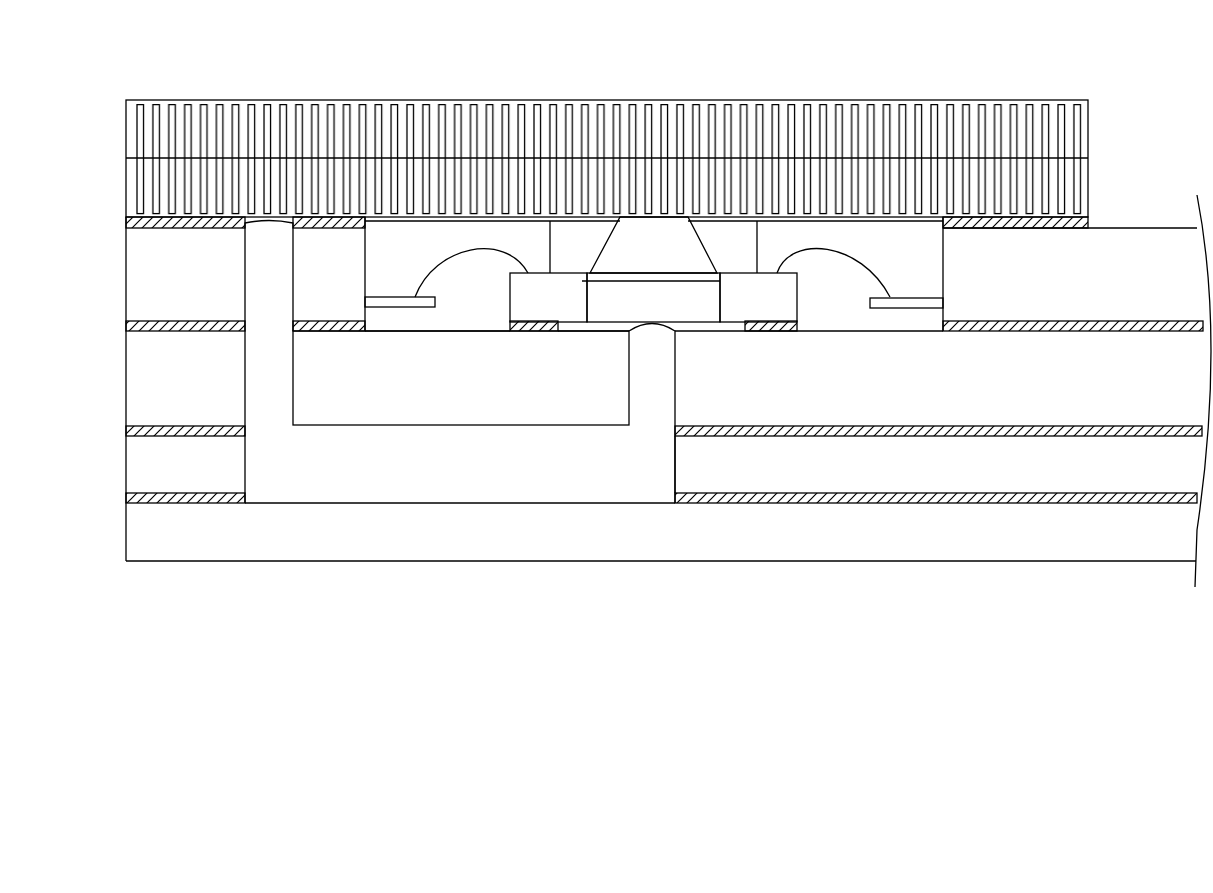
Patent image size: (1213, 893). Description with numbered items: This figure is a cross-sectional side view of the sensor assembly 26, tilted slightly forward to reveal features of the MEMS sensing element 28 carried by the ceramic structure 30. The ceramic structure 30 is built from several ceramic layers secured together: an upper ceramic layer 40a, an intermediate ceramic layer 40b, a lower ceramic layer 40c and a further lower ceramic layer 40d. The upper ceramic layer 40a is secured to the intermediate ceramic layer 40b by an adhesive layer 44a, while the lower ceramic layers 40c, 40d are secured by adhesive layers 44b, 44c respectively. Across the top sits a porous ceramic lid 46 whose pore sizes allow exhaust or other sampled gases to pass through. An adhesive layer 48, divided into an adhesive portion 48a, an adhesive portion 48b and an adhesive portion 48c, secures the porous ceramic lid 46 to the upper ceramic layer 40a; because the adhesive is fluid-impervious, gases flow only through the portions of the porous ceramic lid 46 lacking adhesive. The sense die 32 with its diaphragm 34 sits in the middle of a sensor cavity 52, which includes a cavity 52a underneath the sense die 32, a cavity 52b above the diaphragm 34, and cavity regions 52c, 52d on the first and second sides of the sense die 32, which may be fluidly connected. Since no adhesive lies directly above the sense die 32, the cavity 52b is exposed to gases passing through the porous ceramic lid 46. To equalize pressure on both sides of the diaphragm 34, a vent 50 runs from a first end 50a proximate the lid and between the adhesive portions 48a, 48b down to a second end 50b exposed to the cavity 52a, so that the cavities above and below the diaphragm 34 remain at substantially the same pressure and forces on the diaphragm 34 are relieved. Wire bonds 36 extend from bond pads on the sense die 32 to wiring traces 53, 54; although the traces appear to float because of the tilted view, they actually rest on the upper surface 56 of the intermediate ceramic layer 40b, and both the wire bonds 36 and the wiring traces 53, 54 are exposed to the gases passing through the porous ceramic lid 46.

The sensor assembly 26 is at (874, 62).
The MEMS sensing element 28 is at (645, 205).
The ceramic structure 30 is at (605, 572).
The sense die 32 is at (543, 303).
The diaphragm 34 is at (696, 277).
The wire bonds 36 is at (455, 249).
The upper ceramic layer 40a is at (1065, 290).
The intermediate ceramic layer 40b is at (1065, 395).
The lower ceramic layer 40c is at (1063, 483).
The lower ceramic layer 40d is at (1063, 546).
The adhesive layer 44a is at (1028, 332).
The adhesive layer 44b is at (1028, 437).
The adhesive layer 44c is at (1028, 503).
The porous ceramic lid 46 is at (1086, 110).
The adhesive layer 48 is at (1092, 213).
The adhesive portion 48a is at (197, 226).
The adhesive portion 48b is at (355, 227).
The adhesive portion 48c is at (1045, 110).
The vent 50 is at (338, 472).
The first end 50a is at (270, 224).
The second end 50b is at (657, 330).
The sensor cavity 52 is at (720, 215).
The cavity 52a is at (636, 306).
The cavity 52b is at (673, 247).
The cavity region 52c is at (490, 306).
The cavity region 52d is at (856, 307).
The wiring trace 53 is at (387, 308).
The wiring trace 54 is at (903, 309).
The upper surface 56 is at (430, 324).